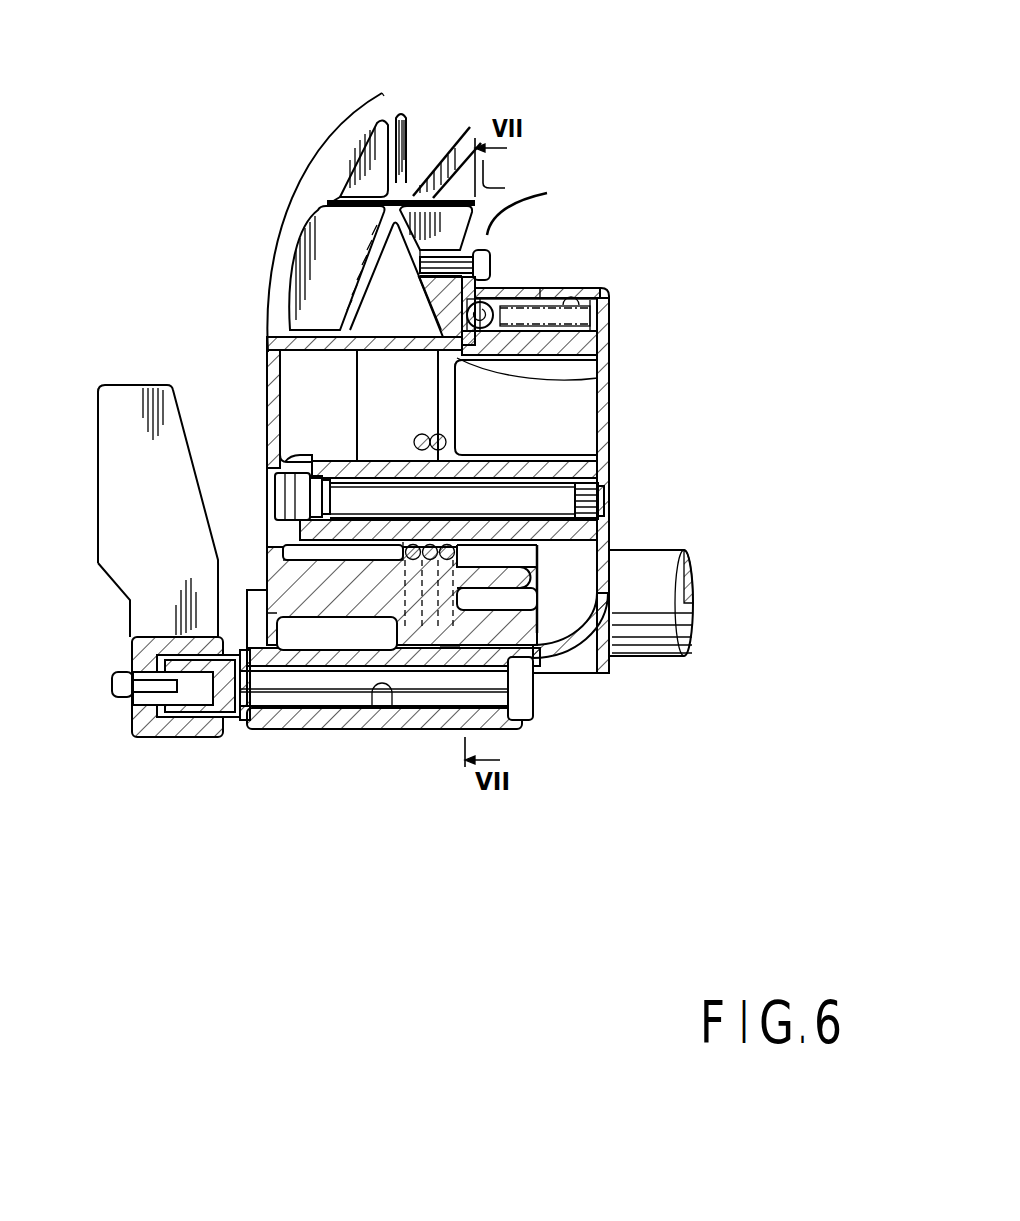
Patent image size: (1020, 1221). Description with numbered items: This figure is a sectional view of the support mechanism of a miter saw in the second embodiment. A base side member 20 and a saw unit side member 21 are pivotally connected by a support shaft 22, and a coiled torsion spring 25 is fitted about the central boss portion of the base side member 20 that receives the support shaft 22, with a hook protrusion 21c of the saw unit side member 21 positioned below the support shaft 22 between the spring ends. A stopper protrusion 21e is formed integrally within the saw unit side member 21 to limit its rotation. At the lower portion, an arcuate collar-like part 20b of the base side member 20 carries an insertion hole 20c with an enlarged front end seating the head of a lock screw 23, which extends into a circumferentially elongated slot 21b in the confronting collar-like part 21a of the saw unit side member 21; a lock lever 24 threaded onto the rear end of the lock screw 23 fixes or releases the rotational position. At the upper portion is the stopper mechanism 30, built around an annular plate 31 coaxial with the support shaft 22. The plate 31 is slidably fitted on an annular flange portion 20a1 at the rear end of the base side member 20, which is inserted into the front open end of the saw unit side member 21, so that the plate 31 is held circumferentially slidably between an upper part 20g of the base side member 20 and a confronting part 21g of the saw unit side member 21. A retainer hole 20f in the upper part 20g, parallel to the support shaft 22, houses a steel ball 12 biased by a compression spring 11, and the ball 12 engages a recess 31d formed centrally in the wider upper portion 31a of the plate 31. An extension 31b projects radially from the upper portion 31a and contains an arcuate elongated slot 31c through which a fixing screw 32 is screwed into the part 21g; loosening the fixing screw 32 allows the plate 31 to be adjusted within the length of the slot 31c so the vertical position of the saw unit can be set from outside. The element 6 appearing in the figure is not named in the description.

The shaft 6 is at (647, 567).
The compression spring 11 is at (620, 290).
The ball 12 is at (547, 287).
The base side member 20 is at (612, 320).
The annular flange portion 20a1 is at (598, 378).
The collar-like part 20b is at (503, 705).
The insertion hole 20c is at (533, 690).
The retainer hole 20f is at (640, 290).
The upper part 20g is at (567, 290).
The saw unit side member 21 is at (268, 372).
The collar-like part 21a is at (427, 723).
The slot 21b is at (372, 707).
The hook protrusion 21c is at (303, 603).
The stopper protrusion 21e is at (520, 590).
The part of the saw unit side member 21g is at (447, 317).
The support shaft 22 is at (527, 485).
The lock screw 23 is at (323, 683).
The lock lever 24 is at (108, 464).
The coiled torsion spring 25 is at (437, 440).
The stopper mechanism 30 is at (495, 263).
The plate 31 is at (467, 867).
The upper portion 31a is at (420, 262).
The extension 31b is at (462, 252).
The elongated slot 31c is at (338, 192).
The recess 31d is at (612, 335).
The fixing screw 32 is at (573, 223).